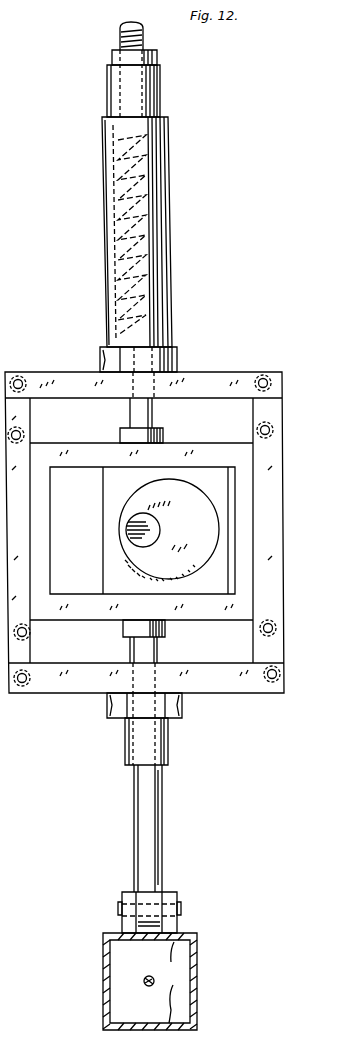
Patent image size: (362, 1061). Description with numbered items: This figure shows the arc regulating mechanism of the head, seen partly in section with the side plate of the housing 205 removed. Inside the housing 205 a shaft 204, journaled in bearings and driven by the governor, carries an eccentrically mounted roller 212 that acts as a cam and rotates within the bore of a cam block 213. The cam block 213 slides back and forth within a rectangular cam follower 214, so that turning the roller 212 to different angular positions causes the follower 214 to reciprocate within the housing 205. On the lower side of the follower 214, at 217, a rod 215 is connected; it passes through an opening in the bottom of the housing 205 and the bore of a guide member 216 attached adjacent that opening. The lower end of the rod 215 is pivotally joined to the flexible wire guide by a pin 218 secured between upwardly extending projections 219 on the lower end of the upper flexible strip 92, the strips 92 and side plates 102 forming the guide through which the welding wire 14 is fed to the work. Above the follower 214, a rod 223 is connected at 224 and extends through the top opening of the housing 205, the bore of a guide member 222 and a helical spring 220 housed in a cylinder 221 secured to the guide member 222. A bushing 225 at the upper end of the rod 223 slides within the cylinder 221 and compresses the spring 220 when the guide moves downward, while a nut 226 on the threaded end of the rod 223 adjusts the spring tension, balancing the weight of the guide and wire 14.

The housing 205 is at (241, 363).
The rod 223 is at (140, 415).
The connection of rod to follower 224 is at (163, 438).
The cam follower 214 is at (142, 521).
The cam block 213 is at (171, 526).
The shaft 204 is at (153, 522).
The roller 212 is at (187, 534).
The connection of rod to follower 217 is at (165, 628).
The guide member 216 is at (125, 742).
The rod 215 is at (160, 820).
The projections 219 is at (176, 893).
The pin 218 is at (120, 910).
The side plates 102 is at (103, 978).
The flexible metallic strips 92 is at (175, 982).
The wire 14 is at (146, 988).
The guide member 222 is at (100, 350).
The helical spring 220 is at (160, 228).
The cylinder 221 is at (103, 210).
The bushing 225 is at (107, 91).
The nut 226 is at (112, 57).